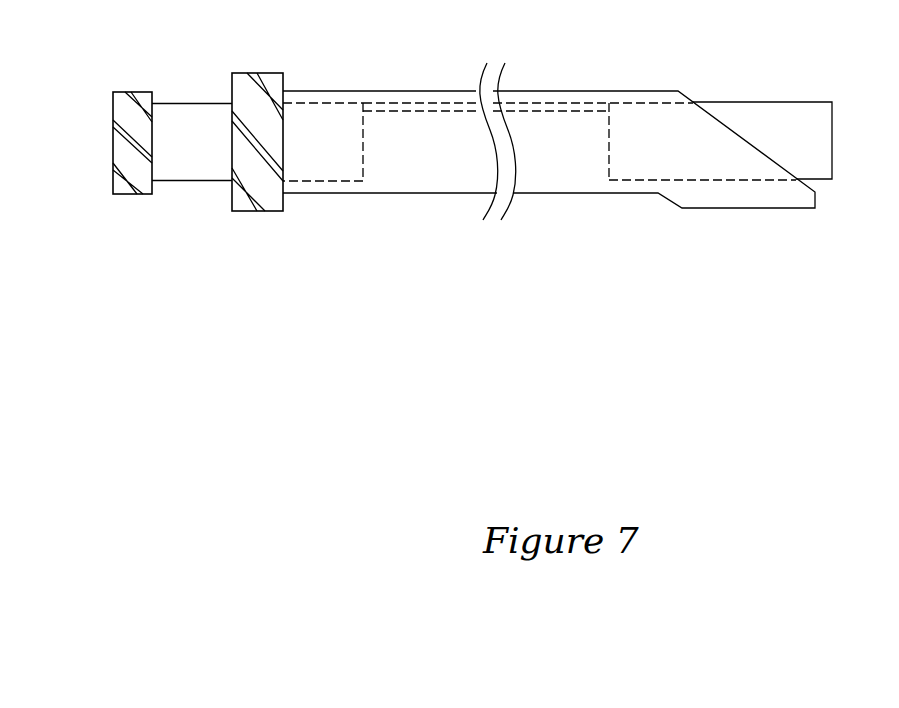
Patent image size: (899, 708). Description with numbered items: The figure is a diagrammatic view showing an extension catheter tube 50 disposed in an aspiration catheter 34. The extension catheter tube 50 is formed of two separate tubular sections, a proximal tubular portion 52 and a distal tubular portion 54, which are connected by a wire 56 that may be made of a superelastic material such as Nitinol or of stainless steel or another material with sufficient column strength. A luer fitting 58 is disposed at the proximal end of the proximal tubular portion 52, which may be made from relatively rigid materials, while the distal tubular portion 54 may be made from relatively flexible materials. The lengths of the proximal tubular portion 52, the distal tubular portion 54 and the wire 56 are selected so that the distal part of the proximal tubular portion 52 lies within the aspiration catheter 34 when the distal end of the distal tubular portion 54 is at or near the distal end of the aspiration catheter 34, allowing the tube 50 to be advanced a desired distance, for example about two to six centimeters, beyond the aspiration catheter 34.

The aspiration catheter 34 is at (568, 125).
The extension catheter tube 50 is at (742, 110).
The proximal tubular portion 52 is at (207, 108).
The distal tubular portion 54 is at (805, 110).
The wire 56 is at (435, 108).
The luer fitting 58 is at (132, 100).